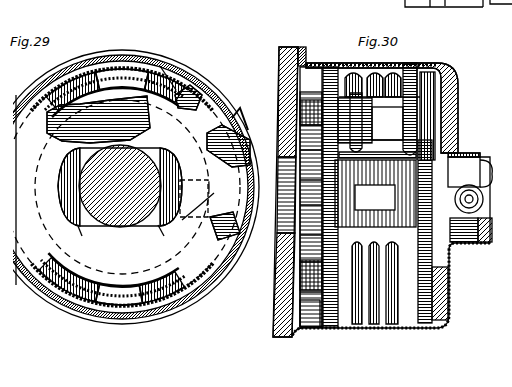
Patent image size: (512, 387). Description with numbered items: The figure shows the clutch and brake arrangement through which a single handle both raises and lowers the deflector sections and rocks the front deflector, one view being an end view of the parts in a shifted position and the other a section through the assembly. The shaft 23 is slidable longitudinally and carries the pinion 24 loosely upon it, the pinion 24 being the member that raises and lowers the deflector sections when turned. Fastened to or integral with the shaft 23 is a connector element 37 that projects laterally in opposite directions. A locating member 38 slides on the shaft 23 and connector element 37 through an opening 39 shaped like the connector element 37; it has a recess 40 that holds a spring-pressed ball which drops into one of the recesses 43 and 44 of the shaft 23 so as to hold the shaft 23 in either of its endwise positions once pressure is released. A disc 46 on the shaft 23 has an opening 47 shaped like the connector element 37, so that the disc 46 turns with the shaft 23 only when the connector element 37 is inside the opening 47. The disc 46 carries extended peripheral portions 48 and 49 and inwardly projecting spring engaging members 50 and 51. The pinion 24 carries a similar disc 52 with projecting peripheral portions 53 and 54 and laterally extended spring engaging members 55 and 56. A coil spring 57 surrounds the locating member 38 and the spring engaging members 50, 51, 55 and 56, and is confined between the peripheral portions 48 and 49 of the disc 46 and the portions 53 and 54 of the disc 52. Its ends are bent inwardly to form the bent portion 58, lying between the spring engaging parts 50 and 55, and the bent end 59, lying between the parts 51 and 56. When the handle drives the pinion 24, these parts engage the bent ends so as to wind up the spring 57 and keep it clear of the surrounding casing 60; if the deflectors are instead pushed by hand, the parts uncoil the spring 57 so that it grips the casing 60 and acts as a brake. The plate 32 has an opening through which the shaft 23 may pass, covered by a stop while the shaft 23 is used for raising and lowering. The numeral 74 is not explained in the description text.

In FIG. 29, the shaft 23 is at (148, 222).
In FIG. 30, the shaft 23 is at (478, 160).
In FIG. 30, the pinion 24 is at (296, 103).
In FIG. 29, the plate 32 is at (195, 72).
In FIG. 30, the plate 32 is at (283, 52).
In FIG. 29, the connector element 37 is at (105, 240).
In FIG. 30, the connector element 37 is at (450, 255).
In FIG. 29, the locating member 38 is at (71, 127).
In FIG. 30, the locating member 38 is at (345, 322).
In FIG. 29, the opening 39 is at (140, 135).
In FIG. 29, the recess 40 is at (205, 196).
In FIG. 30, the recess 43 is at (342, 0).
In FIG. 30, the recess 44 is at (425, 15).
In FIG. 29, the disc 46 is at (92, 230).
In FIG. 30, the disc 46 is at (445, 304).
In FIG. 29, the opening 47 is at (70, 182).
In FIG. 29, the extended peripheral portion 48 is at (20, 275).
In FIG. 30, the extended peripheral portion 48 is at (433, 328).
In FIG. 29, the extended peripheral portion 49 is at (222, 258).
In FIG. 30, the extended peripheral portion 49 is at (446, 66).
In FIG. 29, the spring engaging member 50 is at (242, 118).
In FIG. 30, the spring engaging member 50 is at (420, 110).
In FIG. 29, the spring engaging member 51 is at (205, 268).
In FIG. 30, the spring engaging member 51 is at (336, 70).
In FIG. 29, the disc 52 is at (66, 288).
In FIG. 30, the disc 52 is at (316, 325).
In FIG. 30, the projecting peripheral portion 53 is at (321, 66).
In FIG. 30, the projecting peripheral portion 54 is at (327, 327).
In FIG. 29, the spring engaging member 55 is at (130, 66).
In FIG. 30, the spring engaging member 55 is at (375, 193).
In FIG. 29, the spring engaging member 56 is at (125, 303).
In FIG. 29, the coil spring 57 is at (160, 302).
In FIG. 30, the coil spring 57 is at (368, 326).
In FIG. 29, the bent portion 58 is at (190, 86).
In FIG. 30, the bent portion 58 is at (377, 132).
In FIG. 29, the bent end 59 is at (195, 290).
In FIG. 30, the bent end 59 is at (300, 135).
In FIG. 29, the casing 60 is at (116, 55).
In FIG. 30, the casing 60 is at (403, 66).
In FIG. 29, the lead wire 74 is at (162, 2).